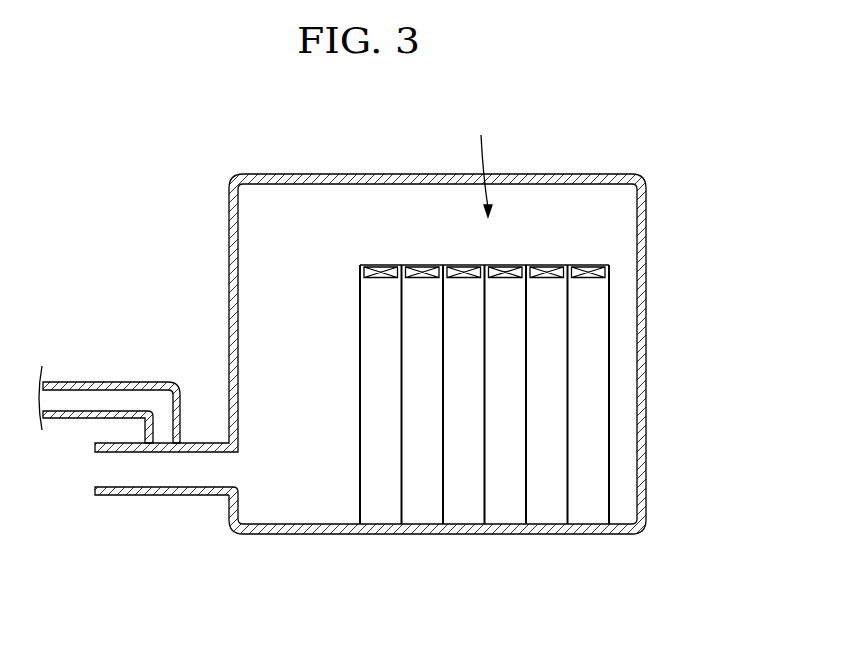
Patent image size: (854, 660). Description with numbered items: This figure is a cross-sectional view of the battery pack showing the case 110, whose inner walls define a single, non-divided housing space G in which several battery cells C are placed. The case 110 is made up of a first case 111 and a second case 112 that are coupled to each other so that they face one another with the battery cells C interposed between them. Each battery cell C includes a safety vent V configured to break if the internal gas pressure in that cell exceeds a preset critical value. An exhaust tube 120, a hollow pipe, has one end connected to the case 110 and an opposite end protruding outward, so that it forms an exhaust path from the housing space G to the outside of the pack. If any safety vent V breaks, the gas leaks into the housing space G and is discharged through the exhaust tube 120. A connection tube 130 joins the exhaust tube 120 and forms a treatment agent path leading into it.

The case 110 is at (441, 354).
The first case 111 is at (648, 244).
The second case 112 is at (411, 422).
The exhaust tube 120 is at (162, 495).
The connection tube 130 is at (105, 381).
The battery cell C is at (383, 513).
The safety vent V is at (382, 265).
The housing space G is at (481, 162).